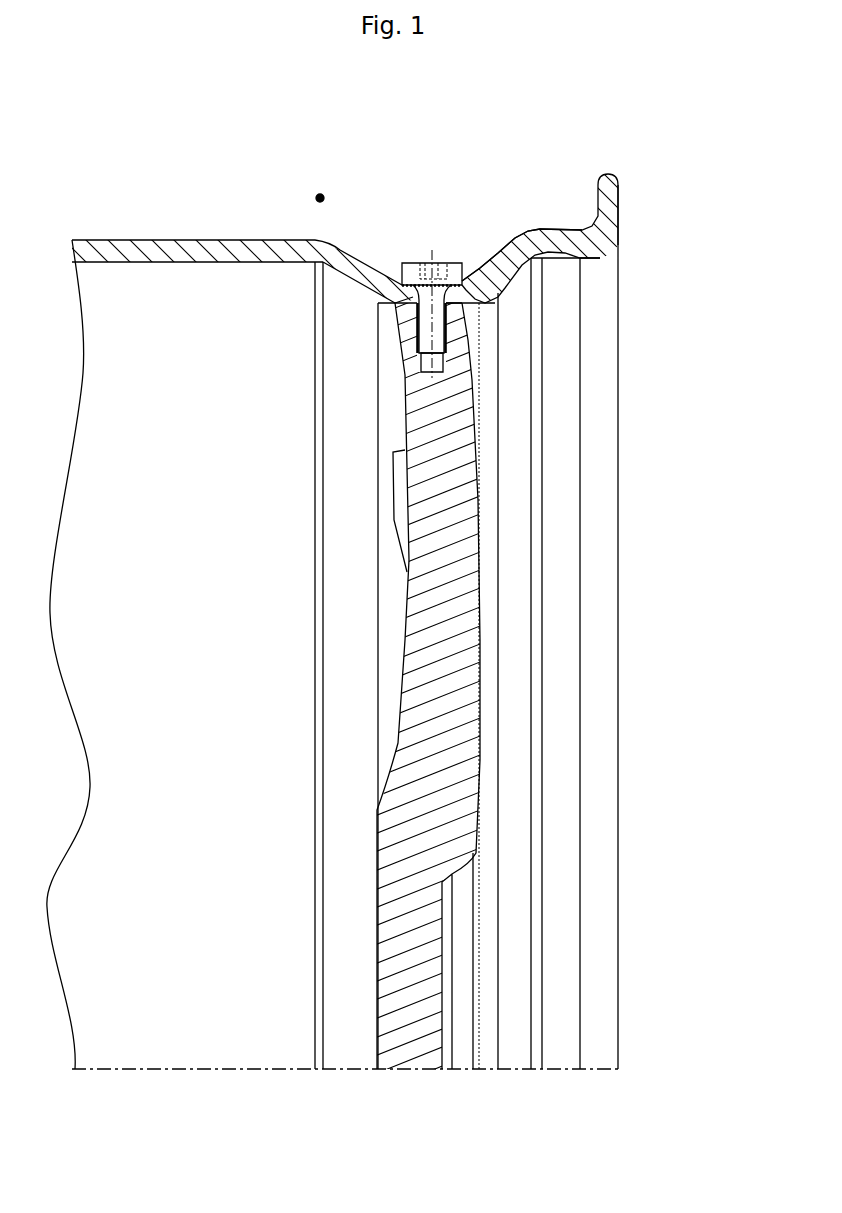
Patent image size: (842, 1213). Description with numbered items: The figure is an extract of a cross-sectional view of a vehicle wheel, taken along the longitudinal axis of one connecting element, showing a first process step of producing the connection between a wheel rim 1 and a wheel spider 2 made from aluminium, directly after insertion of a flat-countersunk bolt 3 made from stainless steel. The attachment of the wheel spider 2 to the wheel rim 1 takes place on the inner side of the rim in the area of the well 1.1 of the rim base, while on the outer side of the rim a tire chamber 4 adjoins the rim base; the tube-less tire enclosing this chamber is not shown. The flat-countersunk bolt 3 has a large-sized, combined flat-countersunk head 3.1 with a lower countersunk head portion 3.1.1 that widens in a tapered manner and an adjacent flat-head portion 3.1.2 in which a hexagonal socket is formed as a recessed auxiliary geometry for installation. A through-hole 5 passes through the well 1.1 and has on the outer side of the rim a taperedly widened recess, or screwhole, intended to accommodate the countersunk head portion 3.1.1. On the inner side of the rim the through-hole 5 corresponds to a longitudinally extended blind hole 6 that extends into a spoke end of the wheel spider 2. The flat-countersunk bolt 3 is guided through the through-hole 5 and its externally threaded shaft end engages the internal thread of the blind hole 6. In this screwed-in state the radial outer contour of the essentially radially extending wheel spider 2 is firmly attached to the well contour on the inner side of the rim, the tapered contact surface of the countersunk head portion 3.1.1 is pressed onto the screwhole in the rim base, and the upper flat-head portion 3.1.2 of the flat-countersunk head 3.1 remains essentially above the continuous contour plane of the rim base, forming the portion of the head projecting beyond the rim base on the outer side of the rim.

The wheel rim 1 is at (597, 440).
The well 1.1 is at (402, 292).
The wheel spider 2 is at (443, 498).
The flat-countersunk bolt 3 is at (452, 267).
The flat-countersunk head 3.1 is at (539, 245).
The countersunk head portion 3.1.1 is at (455, 291).
The flat-head portion 3.1.2 is at (462, 281).
The tire chamber 4 is at (317, 181).
The through-hole 5 is at (468, 302).
The blind hole 6 is at (443, 362).